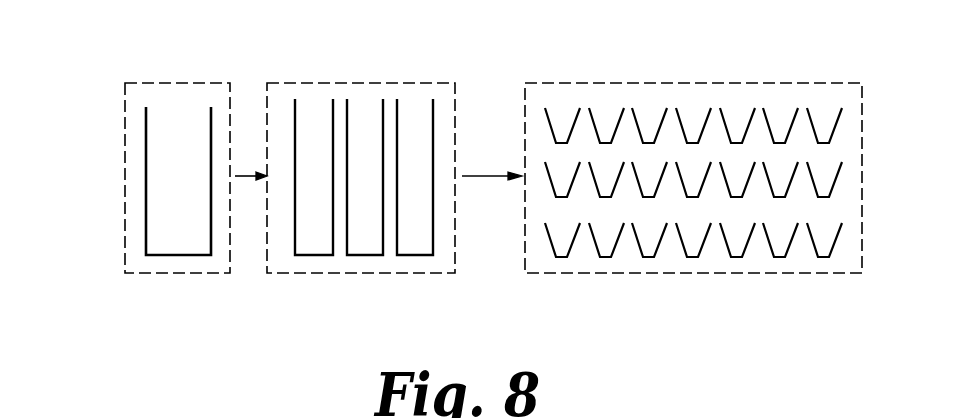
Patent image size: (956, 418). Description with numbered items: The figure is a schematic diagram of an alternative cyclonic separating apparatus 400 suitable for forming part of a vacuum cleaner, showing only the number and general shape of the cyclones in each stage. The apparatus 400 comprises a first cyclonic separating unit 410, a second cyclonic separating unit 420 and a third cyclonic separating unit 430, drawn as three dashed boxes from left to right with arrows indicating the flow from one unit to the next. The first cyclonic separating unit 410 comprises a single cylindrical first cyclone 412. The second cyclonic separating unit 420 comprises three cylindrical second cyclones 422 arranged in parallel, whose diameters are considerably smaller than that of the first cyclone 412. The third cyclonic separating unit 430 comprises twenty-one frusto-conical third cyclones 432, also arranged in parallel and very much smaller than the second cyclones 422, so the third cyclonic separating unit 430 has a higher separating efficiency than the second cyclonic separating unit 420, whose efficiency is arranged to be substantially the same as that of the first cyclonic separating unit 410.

The apparatus 400 is at (224, 70).
The first cyclonic separating unit 410 is at (125, 117).
The first cyclone 412 is at (145, 237).
The second cyclonic separating unit 420 is at (377, 83).
The second cyclones 422 is at (362, 255).
The third cyclonic separating unit 430 is at (647, 83).
The third cyclones 432 is at (723, 247).